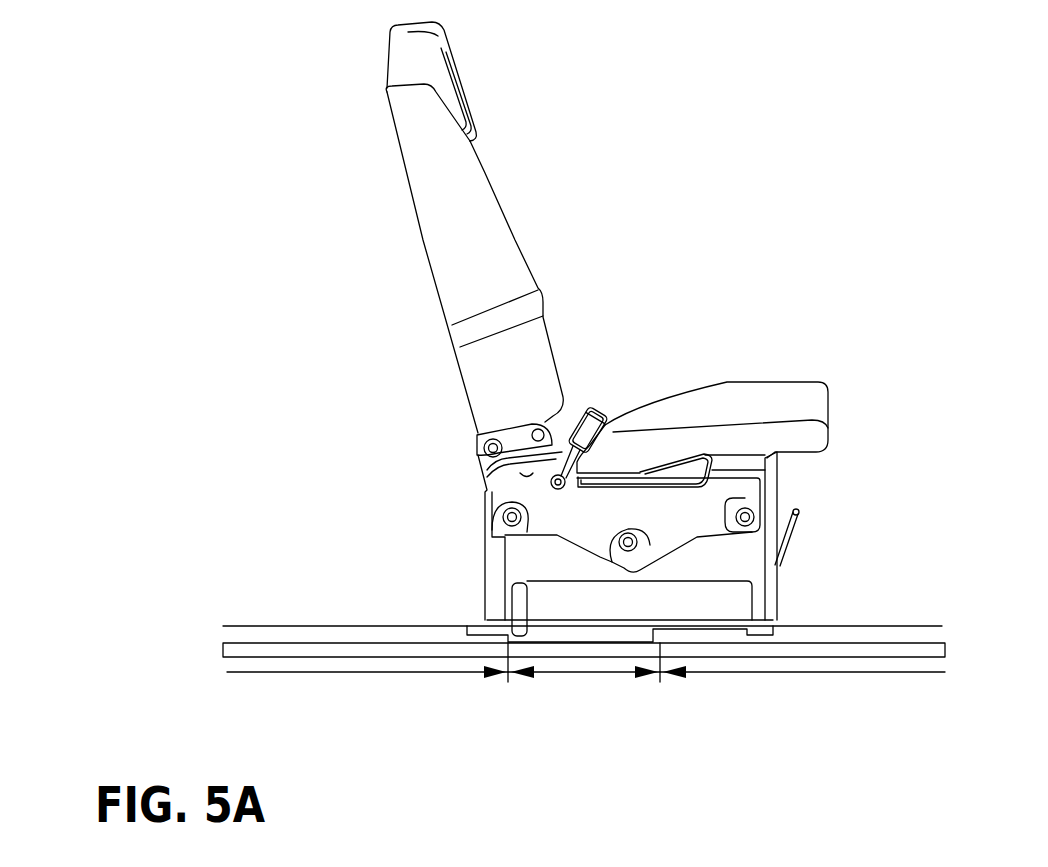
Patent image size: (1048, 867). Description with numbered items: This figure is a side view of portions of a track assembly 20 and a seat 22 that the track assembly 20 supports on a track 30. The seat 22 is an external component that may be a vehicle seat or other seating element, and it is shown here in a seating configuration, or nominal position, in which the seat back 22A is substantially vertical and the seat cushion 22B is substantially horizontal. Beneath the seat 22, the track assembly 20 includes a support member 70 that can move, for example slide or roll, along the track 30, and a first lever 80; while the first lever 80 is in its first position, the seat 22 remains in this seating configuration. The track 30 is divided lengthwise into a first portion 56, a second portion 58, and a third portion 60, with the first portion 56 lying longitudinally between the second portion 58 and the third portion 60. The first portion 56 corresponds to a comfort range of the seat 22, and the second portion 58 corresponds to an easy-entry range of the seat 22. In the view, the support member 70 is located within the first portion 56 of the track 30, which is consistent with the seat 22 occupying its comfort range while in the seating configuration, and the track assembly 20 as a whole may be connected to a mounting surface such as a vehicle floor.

The track assembly 20 is at (707, 332).
The seat 22 is at (627, 255).
The seat back 22A is at (484, 173).
The seat cushion 22B is at (792, 388).
The track 30 is at (947, 629).
The first portion 56 is at (573, 672).
The second portion 58 is at (820, 672).
The third portion 60 is at (392, 672).
The support member 70 is at (767, 500).
The first lever 80 is at (521, 577).